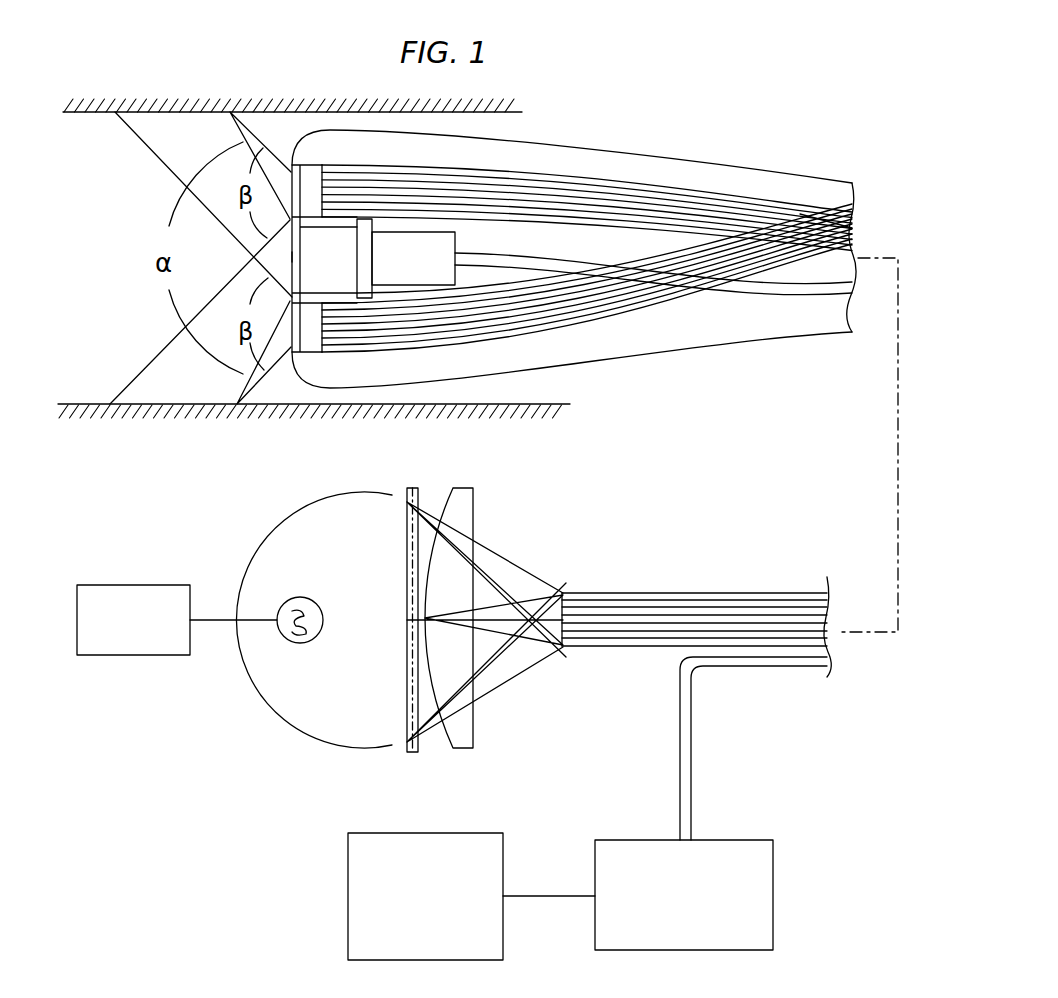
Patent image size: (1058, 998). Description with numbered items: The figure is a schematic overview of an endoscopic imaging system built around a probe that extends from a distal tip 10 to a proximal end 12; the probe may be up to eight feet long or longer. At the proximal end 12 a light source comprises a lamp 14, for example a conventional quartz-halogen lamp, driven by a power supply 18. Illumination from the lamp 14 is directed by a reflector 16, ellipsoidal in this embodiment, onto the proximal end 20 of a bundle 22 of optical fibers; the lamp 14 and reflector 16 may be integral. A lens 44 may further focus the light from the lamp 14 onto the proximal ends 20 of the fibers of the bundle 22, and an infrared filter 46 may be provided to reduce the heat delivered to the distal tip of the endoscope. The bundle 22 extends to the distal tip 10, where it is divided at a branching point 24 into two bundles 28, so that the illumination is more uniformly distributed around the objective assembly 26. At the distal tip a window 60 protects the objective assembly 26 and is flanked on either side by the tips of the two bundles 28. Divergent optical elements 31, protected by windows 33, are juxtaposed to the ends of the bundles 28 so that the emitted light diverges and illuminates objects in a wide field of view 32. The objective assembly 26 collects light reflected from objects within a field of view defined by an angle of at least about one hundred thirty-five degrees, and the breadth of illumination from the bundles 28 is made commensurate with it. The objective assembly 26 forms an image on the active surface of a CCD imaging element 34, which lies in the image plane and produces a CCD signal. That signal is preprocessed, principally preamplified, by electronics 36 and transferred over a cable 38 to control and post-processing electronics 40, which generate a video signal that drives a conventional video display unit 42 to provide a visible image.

The distal tip 10 is at (567, 150).
The proximal end 12 is at (512, 704).
The lamp 14 is at (298, 596).
The reflector 16 is at (262, 548).
The power supply 18 is at (104, 655).
The proximal end of bundle 20 is at (550, 600).
The bundle of optical fibers 22 is at (712, 603).
The branching point 24 is at (803, 230).
The objective assembly 26 is at (349, 267).
The bundles of illuminating optical fibers 28 is at (377, 182).
The divergent optical elements 31 is at (312, 173).
The field of view 32 is at (96, 267).
The windows 33 is at (291, 172).
The CCD imaging element 34 is at (372, 260).
The electronics 36 is at (458, 245).
The cable 38 is at (778, 290).
The control and post-processing electronics 40 is at (773, 887).
The video display unit 42 is at (348, 883).
The lens 44 is at (478, 732).
The infrared filter 46 is at (407, 752).
The window 60 is at (292, 256).